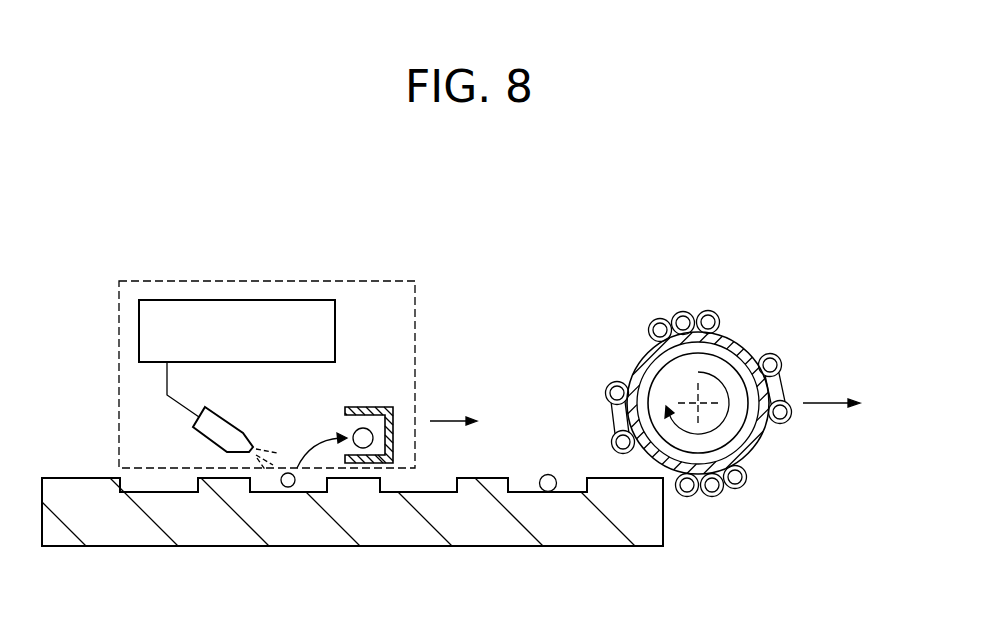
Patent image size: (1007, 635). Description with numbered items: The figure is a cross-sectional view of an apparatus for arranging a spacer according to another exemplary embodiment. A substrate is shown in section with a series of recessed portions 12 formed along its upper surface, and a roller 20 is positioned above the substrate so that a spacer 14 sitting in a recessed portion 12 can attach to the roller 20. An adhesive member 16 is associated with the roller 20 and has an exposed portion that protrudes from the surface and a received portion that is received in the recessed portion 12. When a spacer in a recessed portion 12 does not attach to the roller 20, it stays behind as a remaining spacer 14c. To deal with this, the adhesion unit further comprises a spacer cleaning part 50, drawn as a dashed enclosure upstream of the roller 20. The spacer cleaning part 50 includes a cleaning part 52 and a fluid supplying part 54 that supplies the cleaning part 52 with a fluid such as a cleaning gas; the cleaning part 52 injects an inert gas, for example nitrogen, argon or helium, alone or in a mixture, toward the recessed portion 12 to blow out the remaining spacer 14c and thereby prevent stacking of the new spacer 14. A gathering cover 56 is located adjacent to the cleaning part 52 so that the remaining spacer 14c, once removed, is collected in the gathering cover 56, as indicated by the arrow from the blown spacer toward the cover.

The recessed portion 12 is at (420, 482).
The spacer 14 is at (675, 314).
The remaining spacer 14c is at (548, 474).
The adhesive member 16 is at (707, 311).
The roller 20 is at (633, 377).
The spacer cleaning part 50 is at (285, 281).
The cleaning part 52 is at (233, 422).
The fluid supplying part 54 is at (237, 300).
The gathering cover 56 is at (393, 448).